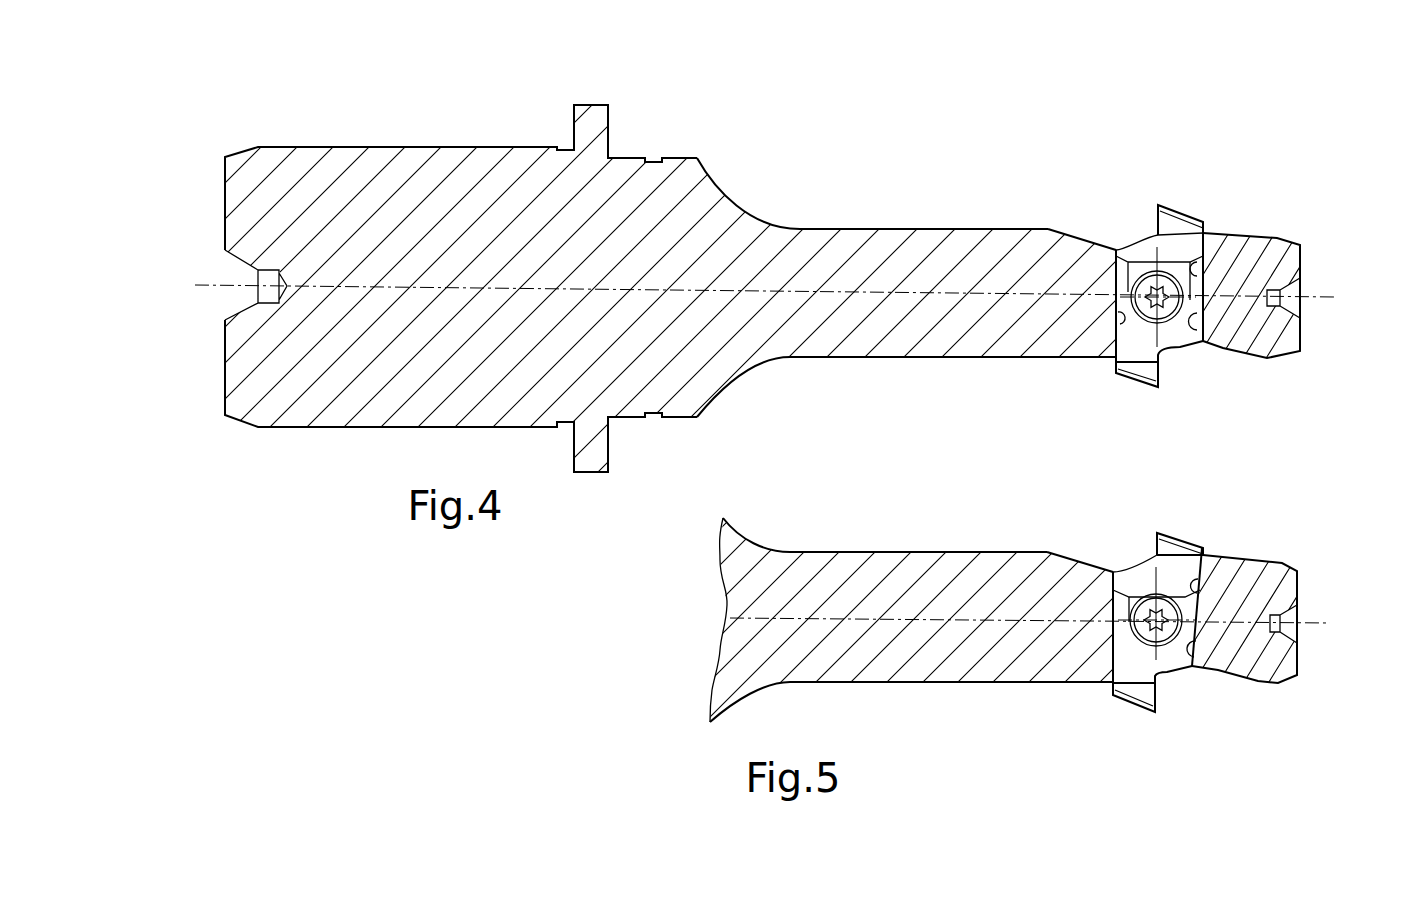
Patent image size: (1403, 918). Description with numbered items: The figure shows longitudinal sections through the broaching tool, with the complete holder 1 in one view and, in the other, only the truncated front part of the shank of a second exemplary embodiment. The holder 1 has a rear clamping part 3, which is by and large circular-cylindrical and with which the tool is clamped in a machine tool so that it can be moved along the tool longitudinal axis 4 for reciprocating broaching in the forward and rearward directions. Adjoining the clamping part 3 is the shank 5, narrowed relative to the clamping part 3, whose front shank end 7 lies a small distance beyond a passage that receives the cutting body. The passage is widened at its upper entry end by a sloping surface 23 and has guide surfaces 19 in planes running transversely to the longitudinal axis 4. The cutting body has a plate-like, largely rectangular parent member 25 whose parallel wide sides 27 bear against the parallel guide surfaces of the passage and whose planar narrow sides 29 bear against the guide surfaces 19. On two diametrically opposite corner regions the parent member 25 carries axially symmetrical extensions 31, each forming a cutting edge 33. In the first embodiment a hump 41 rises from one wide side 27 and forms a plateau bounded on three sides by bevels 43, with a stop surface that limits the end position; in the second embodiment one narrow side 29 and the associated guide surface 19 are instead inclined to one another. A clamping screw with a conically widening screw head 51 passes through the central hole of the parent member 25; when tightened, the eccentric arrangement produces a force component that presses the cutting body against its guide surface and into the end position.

In FIG. 4, the holder 1 is at (693, 120).
In FIG. 4, the clamping part 3 is at (418, 158).
In FIG. 4, the tool longitudinal axis 4 is at (212, 290).
In FIG. 5, the tool longitudinal axis 4 is at (1317, 625).
In FIG. 4, the shank 5 is at (915, 245).
In FIG. 5, the shank 5 is at (868, 573).
In FIG. 4, the front shank end 7 is at (1301, 268).
In FIG. 5, the front shank end 7 is at (1298, 592).
In FIG. 4, the guide surfaces 19 is at (1117, 313).
In FIG. 5, the guide surfaces 19 is at (1122, 567).
In FIG. 4, the sloping surface 23 is at (1069, 238).
In FIG. 5, the sloping surface 23 is at (1070, 557).
In FIG. 5, the parent member 25 is at (1127, 655).
In FIG. 4, the wide sides 27 is at (1172, 330).
In FIG. 5, the wide sides 27 is at (1167, 657).
In FIG. 5, the narrow sides 29 is at (1196, 652).
In FIG. 4, the extensions 31 is at (1175, 228).
In FIG. 5, the extensions 31 is at (1180, 550).
In FIG. 4, the cutting edge 33 is at (1158, 203).
In FIG. 5, the cutting edge 33 is at (1157, 533).
In FIG. 4, the hump 41 is at (1183, 270).
In FIG. 4, the bevels 43 is at (1140, 265).
In FIG. 4, the screw head 51 is at (1145, 320).
In FIG. 5, the screw head 51 is at (1195, 580).